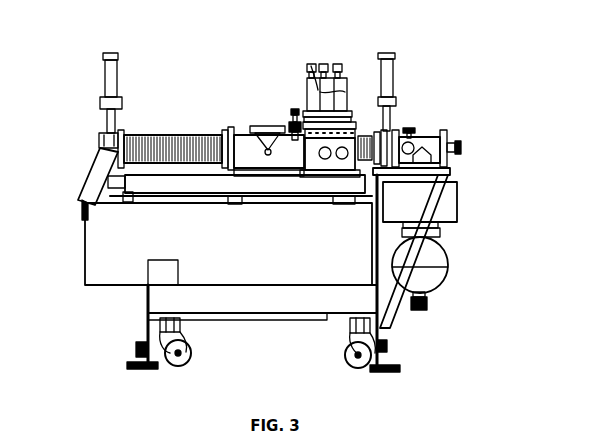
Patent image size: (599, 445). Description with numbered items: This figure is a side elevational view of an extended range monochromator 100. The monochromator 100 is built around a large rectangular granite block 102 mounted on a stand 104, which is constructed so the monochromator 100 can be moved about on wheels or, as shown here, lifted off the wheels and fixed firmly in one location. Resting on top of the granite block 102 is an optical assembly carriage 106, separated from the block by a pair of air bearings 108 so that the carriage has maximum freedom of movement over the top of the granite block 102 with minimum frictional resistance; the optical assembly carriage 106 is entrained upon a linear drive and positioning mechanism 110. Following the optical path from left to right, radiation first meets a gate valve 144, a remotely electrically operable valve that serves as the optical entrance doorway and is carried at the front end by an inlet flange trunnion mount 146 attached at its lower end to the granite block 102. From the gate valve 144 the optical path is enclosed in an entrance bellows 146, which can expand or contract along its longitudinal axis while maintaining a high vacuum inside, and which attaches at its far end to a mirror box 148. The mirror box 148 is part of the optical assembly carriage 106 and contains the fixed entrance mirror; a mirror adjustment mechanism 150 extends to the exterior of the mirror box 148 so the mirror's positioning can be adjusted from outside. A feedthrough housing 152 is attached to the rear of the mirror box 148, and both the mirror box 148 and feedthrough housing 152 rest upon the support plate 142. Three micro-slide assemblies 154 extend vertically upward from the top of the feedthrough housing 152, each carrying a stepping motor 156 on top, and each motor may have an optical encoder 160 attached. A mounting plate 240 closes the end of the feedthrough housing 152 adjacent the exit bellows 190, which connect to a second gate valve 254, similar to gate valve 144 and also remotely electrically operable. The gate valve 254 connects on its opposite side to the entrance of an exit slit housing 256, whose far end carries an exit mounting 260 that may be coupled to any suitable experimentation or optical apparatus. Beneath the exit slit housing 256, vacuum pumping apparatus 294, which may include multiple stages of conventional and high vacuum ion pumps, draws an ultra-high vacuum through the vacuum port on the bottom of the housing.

The extended range monochromator 100 is at (277, 365).
The granite block 102 is at (95, 243).
The stand 104 is at (160, 303).
The optical assembly carriage 106 is at (222, 135).
The air bearings 108 is at (225, 203).
The linear drive and positioning mechanism 110 is at (172, 138).
The support plate 142 is at (222, 174).
The gate valve 144 is at (106, 118).
The inlet flange trunnion mount / entrance bellows 146 is at (146, 150).
The mirror box 148 is at (247, 143).
The mirror adjustment mechanism 150 is at (294, 118).
The feedthrough housing 152 is at (313, 174).
The micro-slide assemblies 154 is at (343, 98).
The stepping motors 156 is at (311, 64).
The optical encoder 160 is at (338, 62).
The exit bellows 190 is at (365, 132).
The mounting plate 240 is at (362, 132).
The gate valve 254 is at (393, 104).
The exit slit housing 256 is at (432, 140).
The exit mounting 260 is at (463, 147).
The vacuum pumping apparatus 294 is at (458, 218).